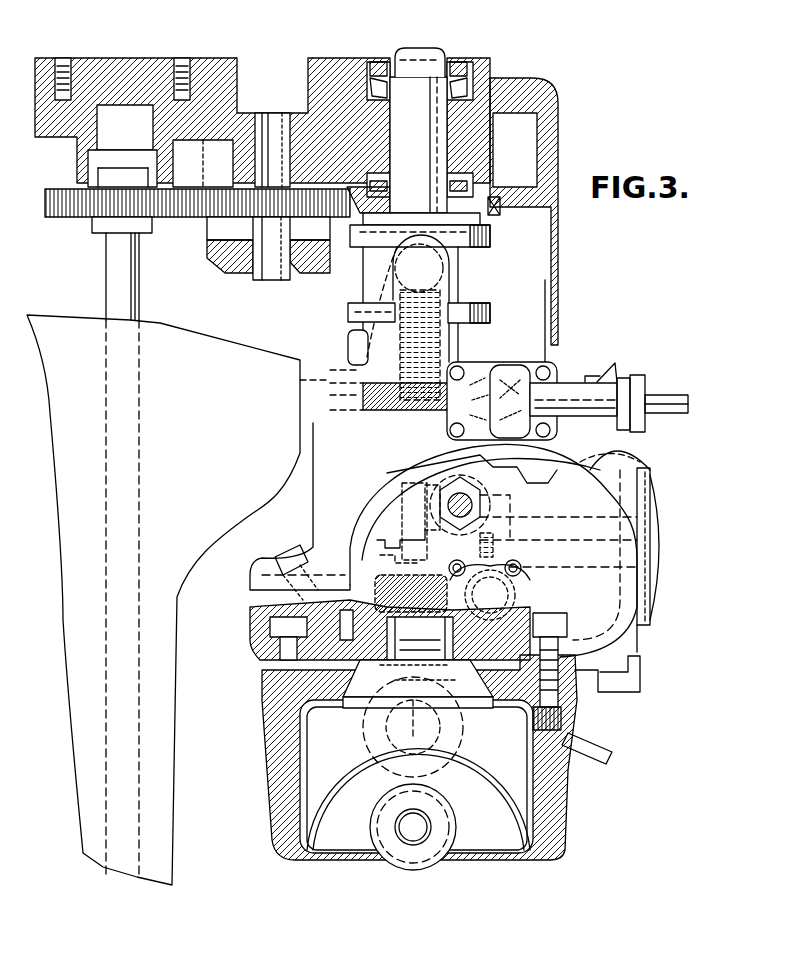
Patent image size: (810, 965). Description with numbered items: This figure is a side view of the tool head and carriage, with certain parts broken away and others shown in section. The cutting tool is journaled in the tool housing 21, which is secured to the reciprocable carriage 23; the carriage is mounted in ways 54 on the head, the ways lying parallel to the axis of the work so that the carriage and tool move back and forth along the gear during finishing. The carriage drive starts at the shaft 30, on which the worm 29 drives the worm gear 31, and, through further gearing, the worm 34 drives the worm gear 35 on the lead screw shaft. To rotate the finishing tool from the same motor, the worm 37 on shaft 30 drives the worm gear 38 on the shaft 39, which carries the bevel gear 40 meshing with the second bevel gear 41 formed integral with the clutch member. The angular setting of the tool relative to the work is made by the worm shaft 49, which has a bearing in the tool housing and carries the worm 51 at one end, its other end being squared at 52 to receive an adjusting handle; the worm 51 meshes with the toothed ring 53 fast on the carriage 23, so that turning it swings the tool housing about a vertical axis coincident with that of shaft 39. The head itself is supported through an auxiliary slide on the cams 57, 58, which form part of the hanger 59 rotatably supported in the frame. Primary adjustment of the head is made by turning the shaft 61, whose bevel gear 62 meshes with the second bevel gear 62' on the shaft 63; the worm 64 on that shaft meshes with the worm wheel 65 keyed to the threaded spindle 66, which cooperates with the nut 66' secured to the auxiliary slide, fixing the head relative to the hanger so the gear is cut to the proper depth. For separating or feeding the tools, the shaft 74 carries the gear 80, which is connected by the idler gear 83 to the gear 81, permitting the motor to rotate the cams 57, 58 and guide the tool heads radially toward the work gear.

The tool housing 21 is at (450, 741).
The reciprocable carriage 23 is at (620, 620).
The worm 29 is at (514, 590).
The shaft 30 is at (493, 550).
The worm gear 31 is at (492, 500).
The worm 34 is at (397, 540).
The worm gear 35 is at (425, 517).
The worm 37 is at (435, 622).
The worm gear 38 is at (378, 593).
The shaft 39 is at (420, 638).
The bevel gear 40 is at (416, 776).
The second bevel gear 41 is at (372, 757).
The worm shaft 49 is at (460, 748).
The worm 51 is at (413, 727).
The squared end 52 is at (598, 750).
The toothed ring 53 is at (348, 702).
The ways 54 is at (597, 457).
The cam 57 is at (482, 243).
The cam 58 is at (478, 310).
The hanger 59 is at (430, 150).
The shaft 61 is at (640, 397).
The bevel gear 62 is at (520, 381).
The second bevel gear 62' is at (500, 383).
The shaft 63 is at (518, 447).
The worm 64 is at (456, 440).
The worm wheel 65 is at (382, 410).
The threaded spindle 66 is at (383, 300).
The nut 66' is at (307, 384).
The shaft 74 is at (140, 301).
The gear 80 is at (72, 212).
The gear 81 is at (540, 222).
The idler gear 83 is at (232, 218).